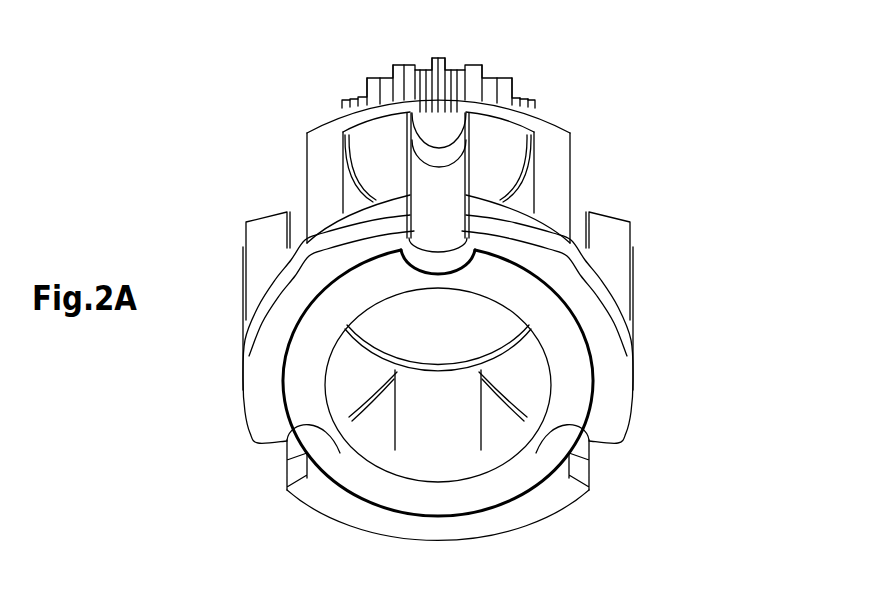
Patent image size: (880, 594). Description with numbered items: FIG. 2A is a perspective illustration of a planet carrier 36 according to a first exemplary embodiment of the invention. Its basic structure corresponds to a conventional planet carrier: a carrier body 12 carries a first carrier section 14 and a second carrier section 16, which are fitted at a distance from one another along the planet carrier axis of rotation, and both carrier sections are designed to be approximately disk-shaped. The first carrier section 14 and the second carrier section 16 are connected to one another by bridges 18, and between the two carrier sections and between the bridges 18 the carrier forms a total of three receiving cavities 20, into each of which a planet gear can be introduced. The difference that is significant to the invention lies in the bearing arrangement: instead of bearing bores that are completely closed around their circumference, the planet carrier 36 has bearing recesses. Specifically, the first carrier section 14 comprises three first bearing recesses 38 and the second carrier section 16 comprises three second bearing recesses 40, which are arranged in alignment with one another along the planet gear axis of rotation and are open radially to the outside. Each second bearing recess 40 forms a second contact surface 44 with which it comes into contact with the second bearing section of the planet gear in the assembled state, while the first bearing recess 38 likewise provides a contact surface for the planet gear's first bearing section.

The planet carrier 36 is at (187, 133).
The first carrier section 14 is at (620, 403).
The first bearing recess 38 is at (587, 453).
The carrier body 12 is at (558, 170).
The bridges 18 is at (438, 187).
The second carrier section 16 is at (530, 107).
The receiving cavities 20 is at (390, 152).
The second bearing recess 40 is at (425, 127).
The second contact surface 44 is at (437, 153).